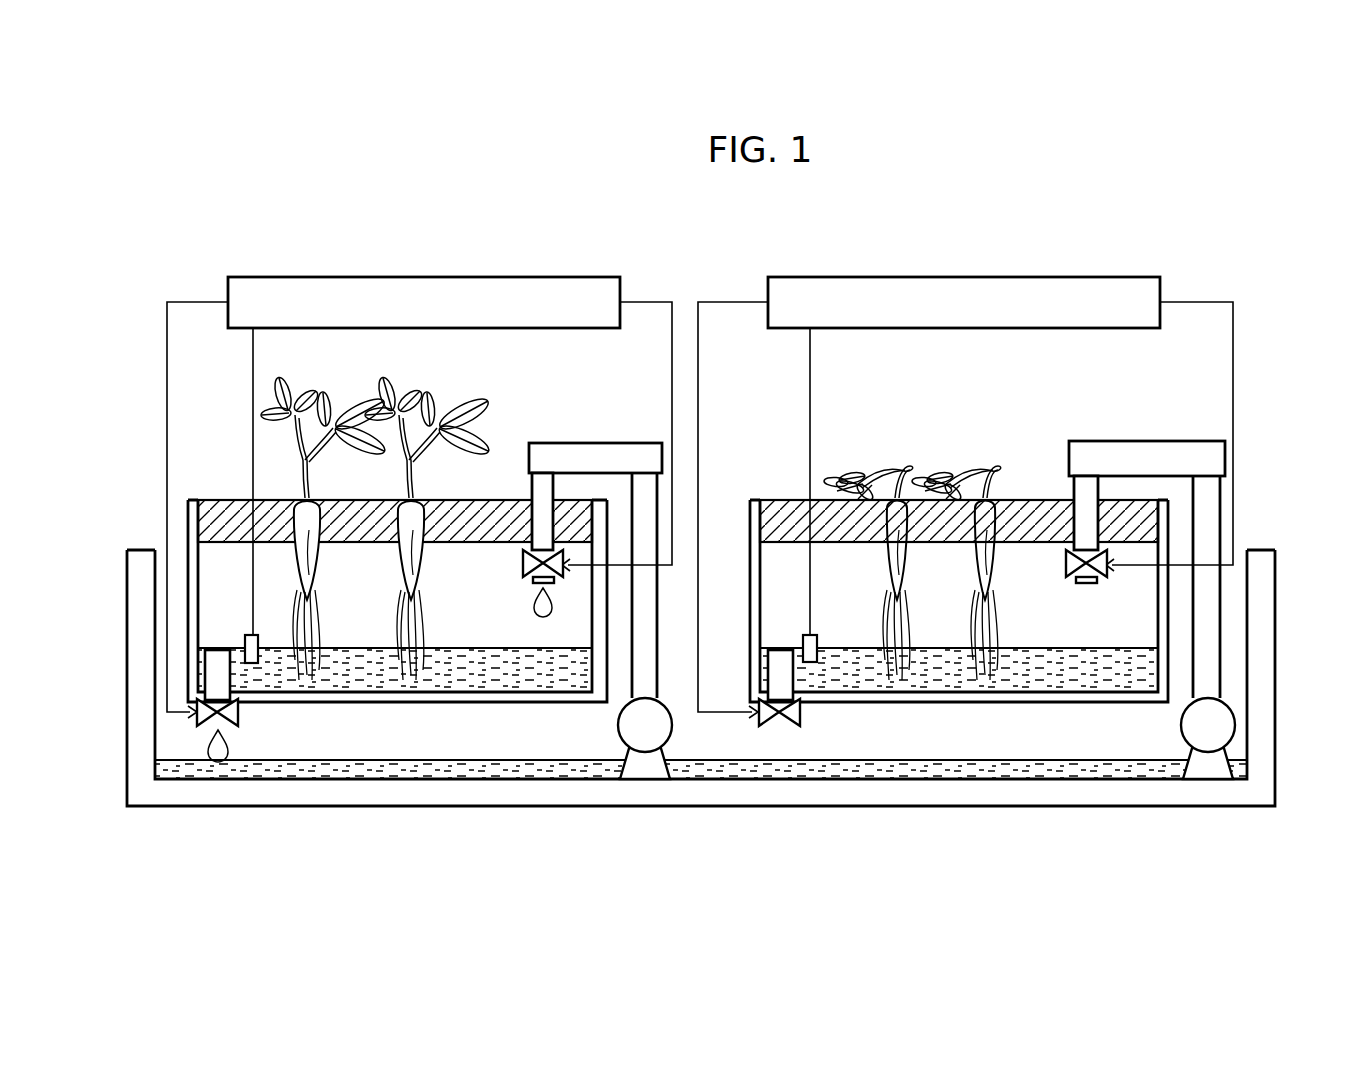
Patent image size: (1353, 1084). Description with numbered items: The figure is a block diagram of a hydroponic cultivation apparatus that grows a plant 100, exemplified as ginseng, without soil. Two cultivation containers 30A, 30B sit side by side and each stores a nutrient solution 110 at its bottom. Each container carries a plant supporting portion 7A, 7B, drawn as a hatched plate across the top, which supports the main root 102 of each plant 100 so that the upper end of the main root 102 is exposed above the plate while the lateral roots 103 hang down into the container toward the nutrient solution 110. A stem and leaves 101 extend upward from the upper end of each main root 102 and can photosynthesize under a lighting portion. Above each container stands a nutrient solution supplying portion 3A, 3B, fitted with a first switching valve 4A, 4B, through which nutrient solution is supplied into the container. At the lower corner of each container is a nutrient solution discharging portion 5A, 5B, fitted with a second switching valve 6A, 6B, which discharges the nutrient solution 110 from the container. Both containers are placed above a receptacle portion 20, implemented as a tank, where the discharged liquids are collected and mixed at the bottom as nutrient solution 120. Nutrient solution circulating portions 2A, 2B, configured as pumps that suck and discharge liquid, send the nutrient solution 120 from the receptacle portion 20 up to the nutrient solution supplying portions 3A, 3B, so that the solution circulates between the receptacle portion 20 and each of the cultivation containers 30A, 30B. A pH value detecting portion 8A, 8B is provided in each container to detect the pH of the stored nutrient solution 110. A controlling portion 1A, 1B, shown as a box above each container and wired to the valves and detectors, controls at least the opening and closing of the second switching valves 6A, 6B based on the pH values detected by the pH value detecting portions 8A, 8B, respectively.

The controlling portion 1A is at (470, 277).
The controlling portion 1B is at (962, 277).
The nutrient solution circulating portion 2A is at (670, 728).
The nutrient solution circulating portion 2B is at (1183, 730).
The nutrient solution supplying portion 3A is at (612, 443).
The nutrient solution supplying portion 3B is at (1150, 441).
The first switching valve 4A is at (522, 563).
The first switching valve 4B is at (1065, 563).
The nutrient solution discharging portion 5A is at (205, 668).
The nutrient solution discharging portion 5B is at (770, 668).
The second switching valve 6A is at (200, 720).
The second switching valve 6B is at (795, 720).
The plant supporting portion 7A is at (502, 500).
The plant supporting portion 7B is at (1032, 500).
The pH value detecting portion 8A is at (245, 635).
The pH value detecting portion 8B is at (806, 635).
The receptacle portion 20 is at (1268, 645).
The cultivation container 30A is at (190, 508).
The cultivation container 30B is at (1165, 600).
The plant 100 is at (621, 512).
The stem and leaves 101 is at (380, 386).
The main root 102 is at (404, 578).
The lateral roots 103 is at (402, 628).
The nutrient solution 110 is at (478, 648).
The nutrient solution 120 is at (950, 765).